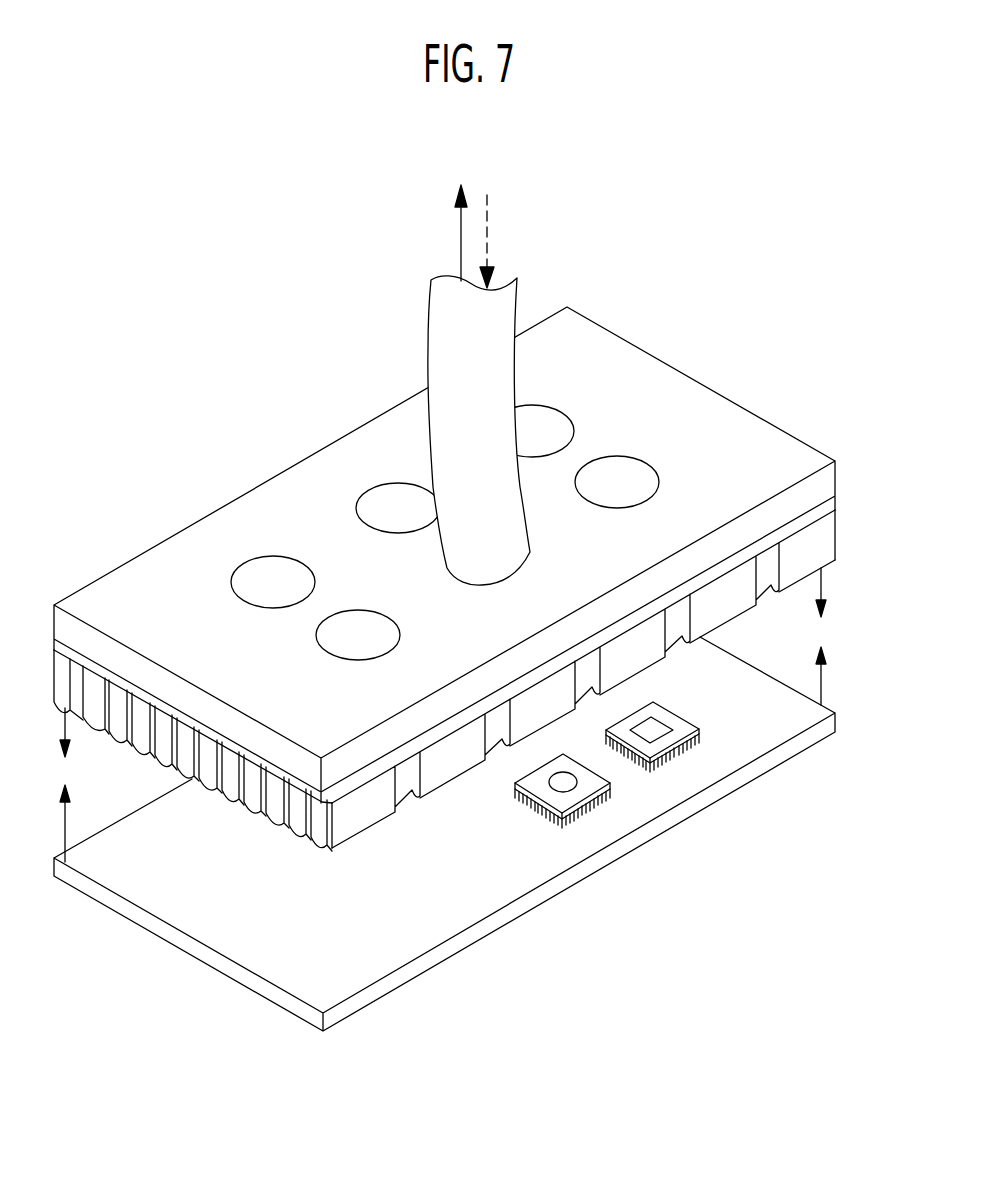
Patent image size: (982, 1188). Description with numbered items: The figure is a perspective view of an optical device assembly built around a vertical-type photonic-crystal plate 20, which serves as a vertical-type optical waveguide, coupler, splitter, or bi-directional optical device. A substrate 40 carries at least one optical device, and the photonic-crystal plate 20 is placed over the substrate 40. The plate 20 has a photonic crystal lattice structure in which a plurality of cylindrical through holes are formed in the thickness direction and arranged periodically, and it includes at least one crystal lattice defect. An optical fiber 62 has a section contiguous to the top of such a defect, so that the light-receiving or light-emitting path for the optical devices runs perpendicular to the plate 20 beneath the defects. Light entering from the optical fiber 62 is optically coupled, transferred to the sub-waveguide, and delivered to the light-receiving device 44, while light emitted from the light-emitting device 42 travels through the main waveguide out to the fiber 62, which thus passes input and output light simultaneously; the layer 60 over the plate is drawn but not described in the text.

The photonic-crystal plate 20 is at (824, 541).
The substrate 40 is at (800, 745).
The light-emitting device 42 is at (573, 797).
The light-receiving device 44 is at (672, 740).
The cover plate 60 is at (823, 485).
The optical fiber 62 is at (429, 351).